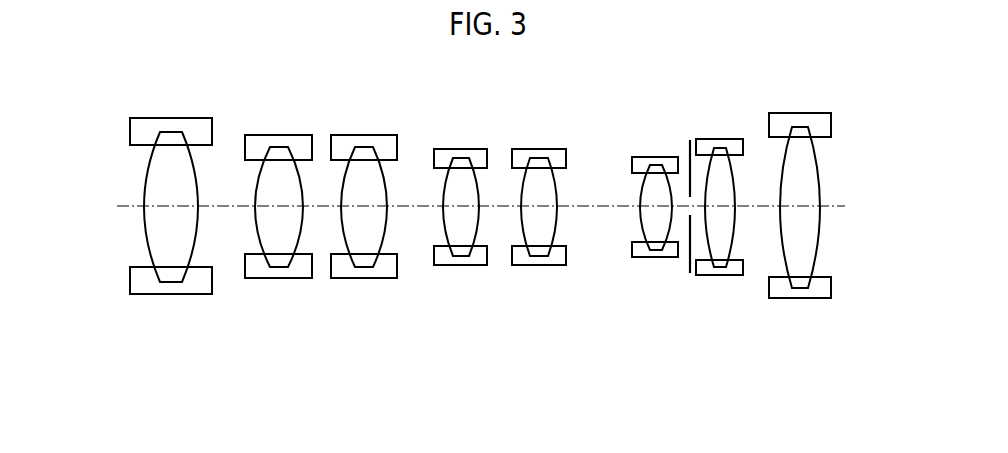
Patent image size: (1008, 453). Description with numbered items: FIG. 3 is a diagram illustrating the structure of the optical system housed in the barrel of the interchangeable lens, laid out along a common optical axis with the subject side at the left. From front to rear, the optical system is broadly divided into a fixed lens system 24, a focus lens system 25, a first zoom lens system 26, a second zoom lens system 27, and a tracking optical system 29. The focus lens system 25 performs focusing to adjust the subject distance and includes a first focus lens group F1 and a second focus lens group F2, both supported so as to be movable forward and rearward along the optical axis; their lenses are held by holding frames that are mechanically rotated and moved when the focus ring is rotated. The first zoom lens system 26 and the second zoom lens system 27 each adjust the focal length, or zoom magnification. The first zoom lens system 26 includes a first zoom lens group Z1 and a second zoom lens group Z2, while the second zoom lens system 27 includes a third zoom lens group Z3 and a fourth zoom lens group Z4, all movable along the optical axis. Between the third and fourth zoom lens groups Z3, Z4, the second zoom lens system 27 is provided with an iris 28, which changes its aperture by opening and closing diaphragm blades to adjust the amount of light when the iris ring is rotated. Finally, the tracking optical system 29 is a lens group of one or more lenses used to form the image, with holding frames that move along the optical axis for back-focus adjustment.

The fixed lens system 24 is at (130, 330).
The focus lens system 25 is at (321, 251).
The first zoom lens system 26 is at (500, 258).
The second zoom lens system 27 is at (687, 253).
The iris 28 is at (688, 143).
The tracking optical system 29 is at (800, 298).
The first focus lens group F1 is at (279, 278).
The second focus lens group F2 is at (364, 234).
The first zoom lens group Z1 is at (461, 265).
The second zoom lens group Z2 is at (539, 234).
The third zoom lens group Z3 is at (656, 257).
The fourth zoom lens group Z4 is at (719, 232).